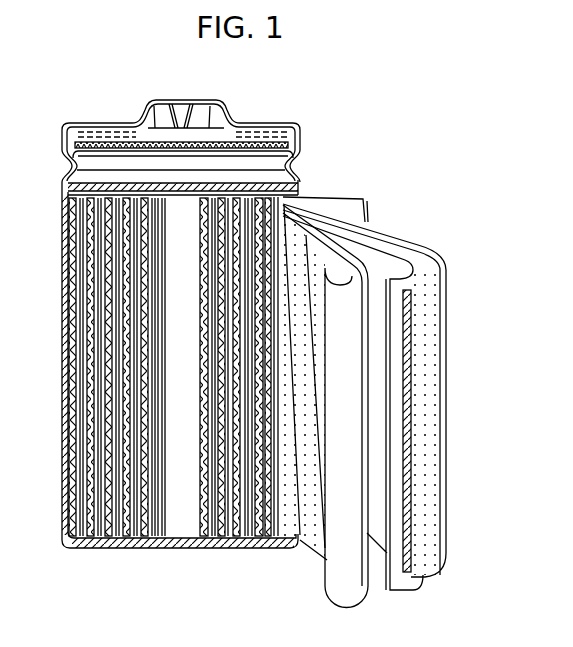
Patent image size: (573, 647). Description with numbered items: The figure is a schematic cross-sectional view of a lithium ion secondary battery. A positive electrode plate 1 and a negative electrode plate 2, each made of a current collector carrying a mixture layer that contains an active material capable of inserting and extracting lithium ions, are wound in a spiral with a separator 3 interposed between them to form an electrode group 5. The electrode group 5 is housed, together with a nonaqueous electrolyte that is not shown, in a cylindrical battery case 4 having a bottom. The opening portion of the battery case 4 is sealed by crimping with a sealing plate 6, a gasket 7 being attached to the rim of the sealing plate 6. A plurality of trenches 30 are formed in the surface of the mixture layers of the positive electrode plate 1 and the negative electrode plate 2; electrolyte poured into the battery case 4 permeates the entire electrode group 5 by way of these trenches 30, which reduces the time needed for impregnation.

The positive electrode plate 1 is at (322, 247).
The negative electrode plate 2 is at (385, 237).
The separator 3 is at (405, 245).
The battery case 4 is at (65, 374).
The electrode group 5 is at (478, 125).
The sealing plate 6 is at (158, 157).
The gasket 7 is at (293, 142).
The trenches 30 is at (283, 248).